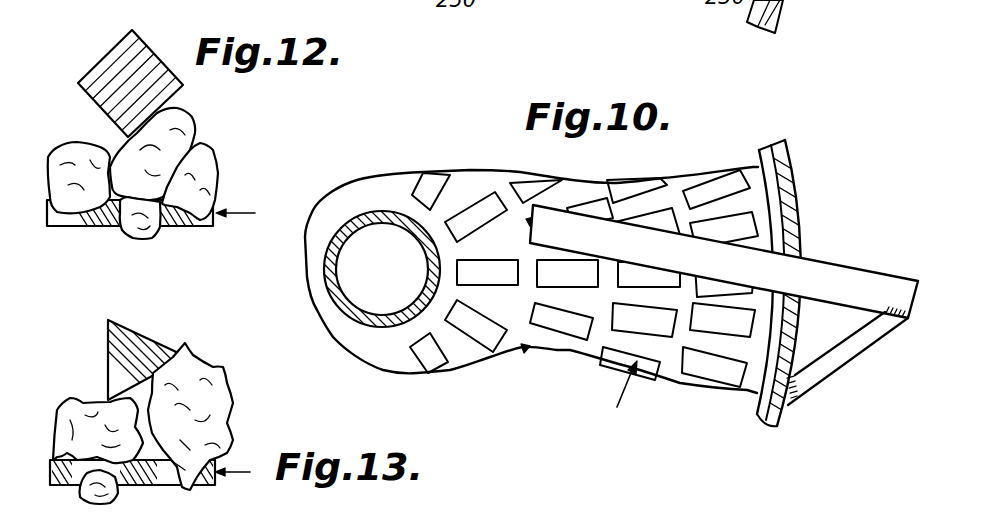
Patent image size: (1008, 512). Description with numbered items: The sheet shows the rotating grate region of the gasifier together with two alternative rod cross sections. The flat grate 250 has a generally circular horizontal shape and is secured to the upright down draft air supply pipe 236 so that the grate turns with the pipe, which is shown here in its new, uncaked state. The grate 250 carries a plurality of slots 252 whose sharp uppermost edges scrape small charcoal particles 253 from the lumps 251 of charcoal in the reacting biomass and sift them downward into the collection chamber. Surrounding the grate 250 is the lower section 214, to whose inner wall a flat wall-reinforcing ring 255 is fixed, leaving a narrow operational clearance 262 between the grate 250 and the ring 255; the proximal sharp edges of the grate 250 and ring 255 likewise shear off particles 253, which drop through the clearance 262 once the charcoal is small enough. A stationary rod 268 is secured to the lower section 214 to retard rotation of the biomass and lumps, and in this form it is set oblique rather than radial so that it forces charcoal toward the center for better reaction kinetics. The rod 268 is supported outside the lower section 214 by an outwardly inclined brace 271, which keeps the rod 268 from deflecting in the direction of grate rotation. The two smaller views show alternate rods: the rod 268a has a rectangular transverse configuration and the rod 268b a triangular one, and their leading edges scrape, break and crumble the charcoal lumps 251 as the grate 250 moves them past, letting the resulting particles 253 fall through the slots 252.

In FIG. 12, the rod of rectangular transverse configuration 268a is at (100, 58).
In FIG. 13, the rod of triangular transverse configuration 268b is at (108, 347).
In FIG. 12, the grate 250 is at (197, 232).
In FIG. 13, the grate 250 is at (50, 460).
In FIG. 10, the grate 250 is at (474, 160).
In FIG. 12, the charcoal lumps 251 is at (192, 147).
In FIG. 13, the charcoal lumps 251 is at (200, 360).
In FIG. 12, the slots 252 is at (110, 209).
In FIG. 13, the slots 252 is at (200, 447).
In FIG. 10, the slots 252 is at (557, 334).
In FIG. 12, the charcoal particles 253 is at (145, 231).
In FIG. 13, the charcoal particles 253 is at (118, 493).
In FIG. 10, the down draft air supply pipe 236 is at (376, 214).
In FIG. 10, the lower section 214 is at (783, 161).
In FIG. 10, the operational clearance 262 is at (774, 233).
In FIG. 10, the rods 268 is at (865, 270).
In FIG. 10, the brace 271 is at (858, 345).
In FIG. 10, the wall-reinforcing ring 255 is at (757, 408).